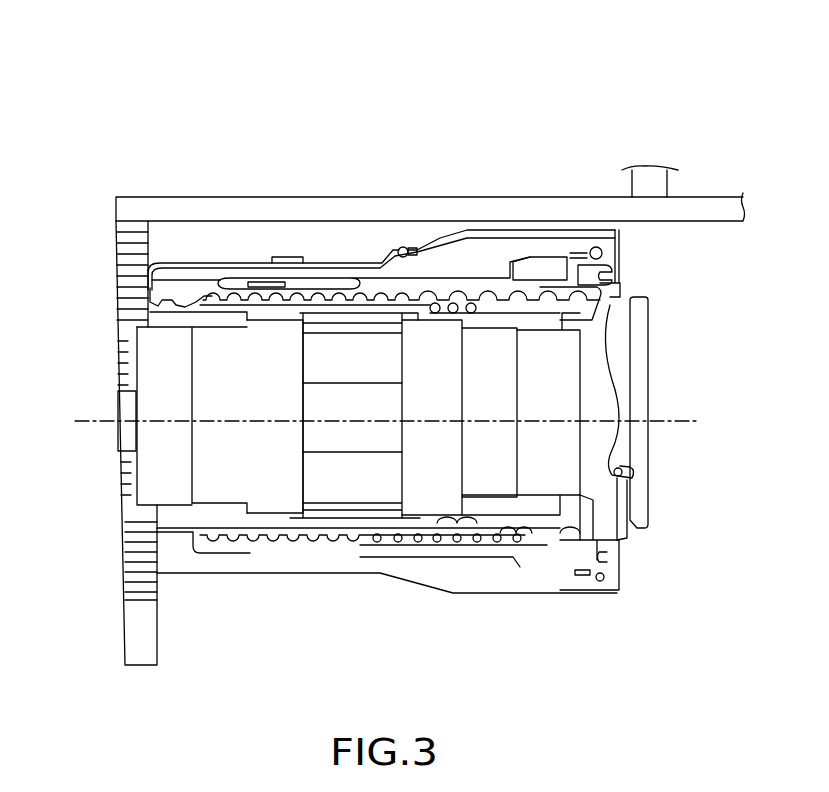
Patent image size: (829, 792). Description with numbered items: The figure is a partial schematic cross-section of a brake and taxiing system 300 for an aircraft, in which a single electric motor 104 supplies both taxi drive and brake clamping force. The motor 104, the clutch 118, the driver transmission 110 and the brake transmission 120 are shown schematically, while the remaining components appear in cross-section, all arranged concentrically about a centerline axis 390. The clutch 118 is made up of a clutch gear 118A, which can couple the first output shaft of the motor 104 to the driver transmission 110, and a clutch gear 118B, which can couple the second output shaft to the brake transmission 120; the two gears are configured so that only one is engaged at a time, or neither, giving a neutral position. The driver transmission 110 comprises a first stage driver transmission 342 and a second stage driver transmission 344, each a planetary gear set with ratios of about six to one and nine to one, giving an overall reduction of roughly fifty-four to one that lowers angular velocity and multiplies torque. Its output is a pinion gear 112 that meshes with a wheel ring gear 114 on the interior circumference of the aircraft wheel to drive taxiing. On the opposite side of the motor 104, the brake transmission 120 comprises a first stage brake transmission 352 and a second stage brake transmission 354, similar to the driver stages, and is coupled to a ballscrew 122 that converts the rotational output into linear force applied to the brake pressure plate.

The brake and taxiing system 300 is at (518, 109).
The motor 104 is at (392, 440).
The driver transmission 110 is at (190, 335).
The pinion gear 112 is at (130, 426).
The wheel ring gear 114 is at (133, 302).
The clutch 118 is at (342, 482).
The clutch gear 118A is at (275, 505).
The clutch gear 118B is at (430, 503).
The brake transmission 120 is at (517, 332).
The ballscrew 122 is at (360, 292).
The first stage driver transmission 342 is at (218, 483).
The second stage driver transmission 344 is at (177, 486).
The first stage brake transmission 352 is at (487, 467).
The second stage brake transmission 354 is at (542, 470).
The centerline axis 390 is at (672, 414).